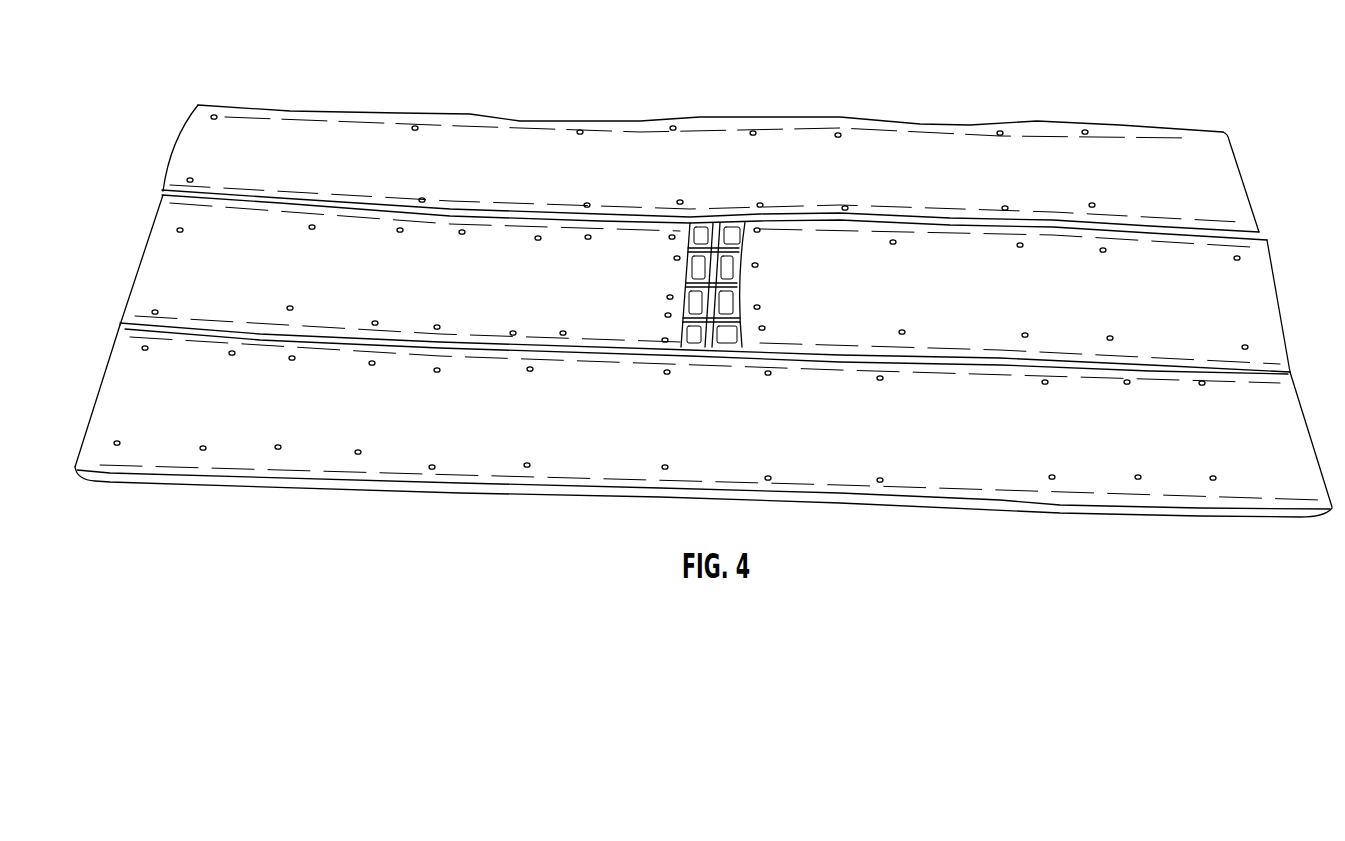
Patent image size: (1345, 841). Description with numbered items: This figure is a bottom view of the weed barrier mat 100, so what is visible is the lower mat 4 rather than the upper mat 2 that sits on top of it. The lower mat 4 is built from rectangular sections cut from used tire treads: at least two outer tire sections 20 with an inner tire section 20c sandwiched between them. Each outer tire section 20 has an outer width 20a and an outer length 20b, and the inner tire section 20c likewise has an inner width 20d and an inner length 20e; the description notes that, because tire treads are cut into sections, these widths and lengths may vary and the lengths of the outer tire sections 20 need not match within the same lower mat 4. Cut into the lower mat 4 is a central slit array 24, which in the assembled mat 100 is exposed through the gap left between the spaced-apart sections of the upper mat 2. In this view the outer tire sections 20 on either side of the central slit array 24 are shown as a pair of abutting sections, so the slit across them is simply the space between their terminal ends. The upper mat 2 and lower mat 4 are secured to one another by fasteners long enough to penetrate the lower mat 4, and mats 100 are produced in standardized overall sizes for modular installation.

The weed barrier mat 100 is at (364, 569).
The lower mat 4 is at (490, 70).
The upper mat 2 is at (1240, 532).
The outer tire section 20 is at (943, 158).
The outer width 20a is at (1233, 158).
The outer length 20b is at (628, 118).
The inner tire section 20c is at (1163, 280).
The inner width 20d is at (142, 262).
The inner length 20e is at (427, 207).
The central slit array 24 is at (699, 341).